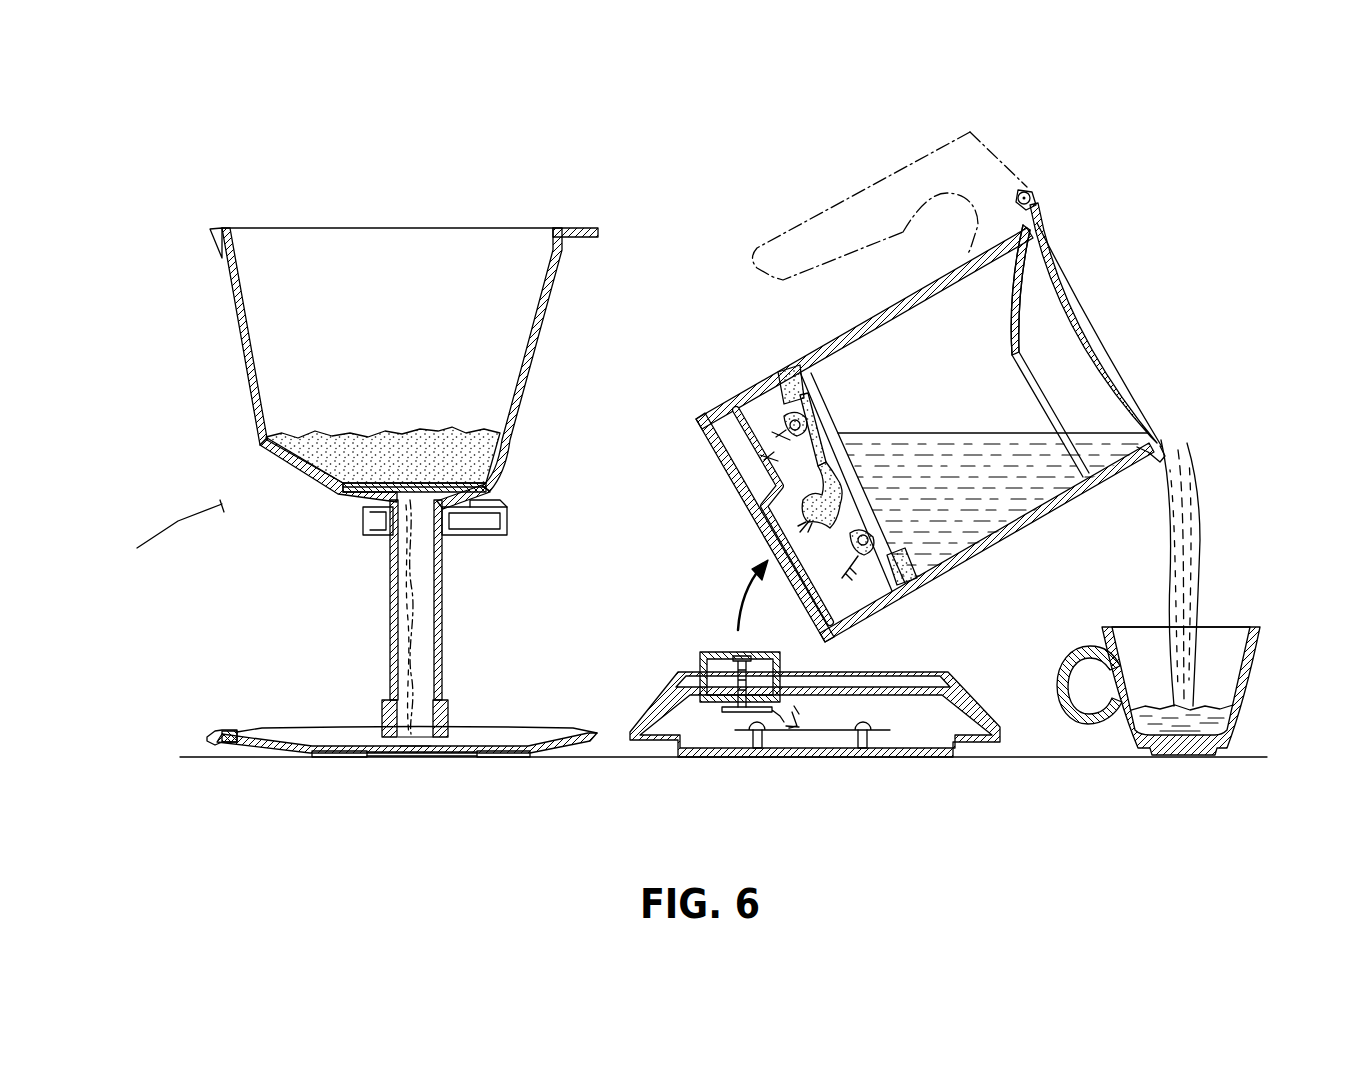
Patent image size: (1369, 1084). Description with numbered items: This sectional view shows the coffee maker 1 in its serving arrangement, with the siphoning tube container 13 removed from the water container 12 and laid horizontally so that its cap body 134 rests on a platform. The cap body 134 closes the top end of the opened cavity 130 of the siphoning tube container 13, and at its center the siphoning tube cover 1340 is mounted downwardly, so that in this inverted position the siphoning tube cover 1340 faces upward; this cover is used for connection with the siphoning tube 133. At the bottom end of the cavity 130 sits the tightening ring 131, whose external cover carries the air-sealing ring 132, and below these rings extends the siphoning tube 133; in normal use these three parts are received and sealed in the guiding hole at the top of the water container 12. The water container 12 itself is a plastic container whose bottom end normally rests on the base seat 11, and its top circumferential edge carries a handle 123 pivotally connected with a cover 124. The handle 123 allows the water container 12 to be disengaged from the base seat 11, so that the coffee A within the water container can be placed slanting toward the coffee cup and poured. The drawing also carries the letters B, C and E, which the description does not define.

The coffee maker 1 is at (172, 534).
The base seat 11 is at (671, 672).
The water container 12 is at (770, 374).
The handle 123 is at (865, 188).
The cover 124 is at (1070, 308).
The siphoning tube container 13 is at (361, 318).
The opened cavity 130 is at (306, 250).
The tightening ring 131 is at (493, 494).
The air-sealing ring 132 is at (474, 533).
The siphoning tube 133 is at (442, 641).
The cap body 134 is at (560, 748).
The siphoning tube cover 1340 is at (420, 742).
The coffee A is at (1200, 536).
The coffee grounds B is at (425, 482).
The brewed coffee C is at (332, 440).
The cup E is at (1262, 660).